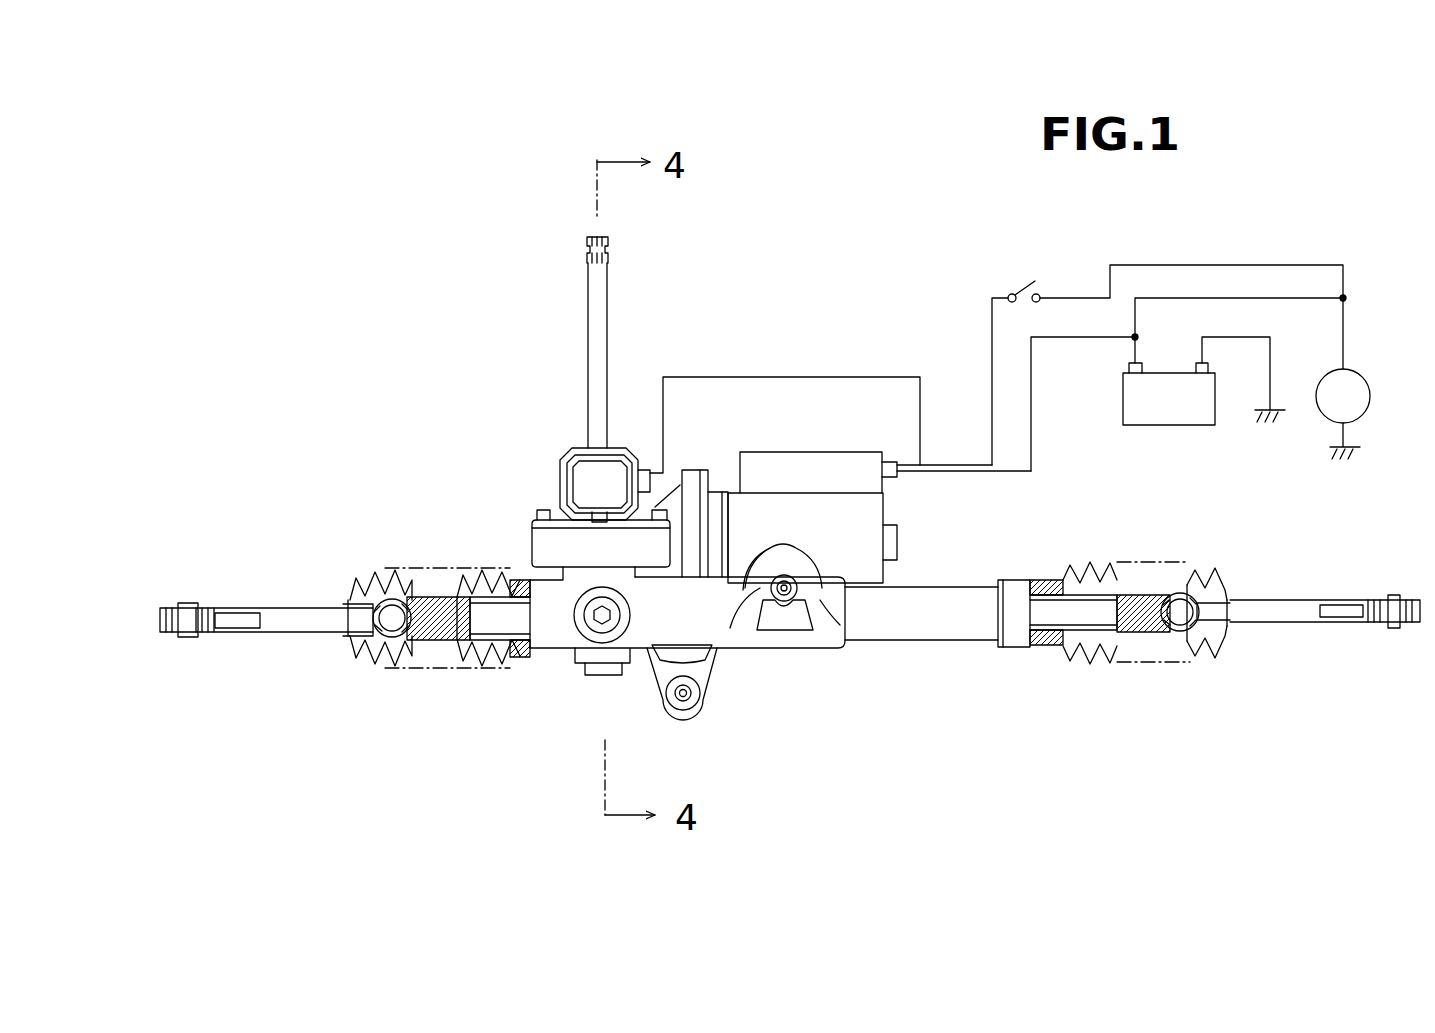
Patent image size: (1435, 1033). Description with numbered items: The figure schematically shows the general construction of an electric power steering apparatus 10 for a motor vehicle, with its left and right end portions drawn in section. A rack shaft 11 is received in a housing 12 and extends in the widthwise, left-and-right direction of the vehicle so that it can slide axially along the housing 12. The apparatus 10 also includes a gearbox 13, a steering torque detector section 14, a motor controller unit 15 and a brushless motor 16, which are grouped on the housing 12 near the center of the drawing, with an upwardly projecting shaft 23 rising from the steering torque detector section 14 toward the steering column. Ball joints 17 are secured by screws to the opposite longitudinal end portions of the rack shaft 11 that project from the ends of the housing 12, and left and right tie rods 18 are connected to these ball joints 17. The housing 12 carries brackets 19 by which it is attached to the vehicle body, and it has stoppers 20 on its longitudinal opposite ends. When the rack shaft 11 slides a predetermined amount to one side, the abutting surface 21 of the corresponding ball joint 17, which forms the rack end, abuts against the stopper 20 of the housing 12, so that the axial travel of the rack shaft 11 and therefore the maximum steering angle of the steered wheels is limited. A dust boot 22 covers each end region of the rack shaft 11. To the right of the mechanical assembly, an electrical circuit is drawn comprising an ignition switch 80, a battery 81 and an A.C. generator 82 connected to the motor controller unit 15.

The electric power steering apparatus 10 is at (800, 220).
The rack shaft 11 is at (485, 615).
The housing 12 is at (833, 607).
The gearbox 13 is at (960, 566).
The steering torque detector section 14 is at (585, 490).
The motor controller unit 15 is at (815, 468).
The brushless motor 16 is at (875, 577).
The ball joint 17 is at (395, 648).
The tie rod 18 is at (318, 617).
The bracket 19 is at (697, 698).
The stopper 20 is at (512, 652).
The abutting surface 21 is at (430, 645).
The dust boot 22 is at (493, 660).
The input shaft 23 is at (600, 287).
The ignition switch 80 is at (1027, 283).
The battery 81 is at (1178, 405).
The A.C. generator 82 is at (1357, 390).